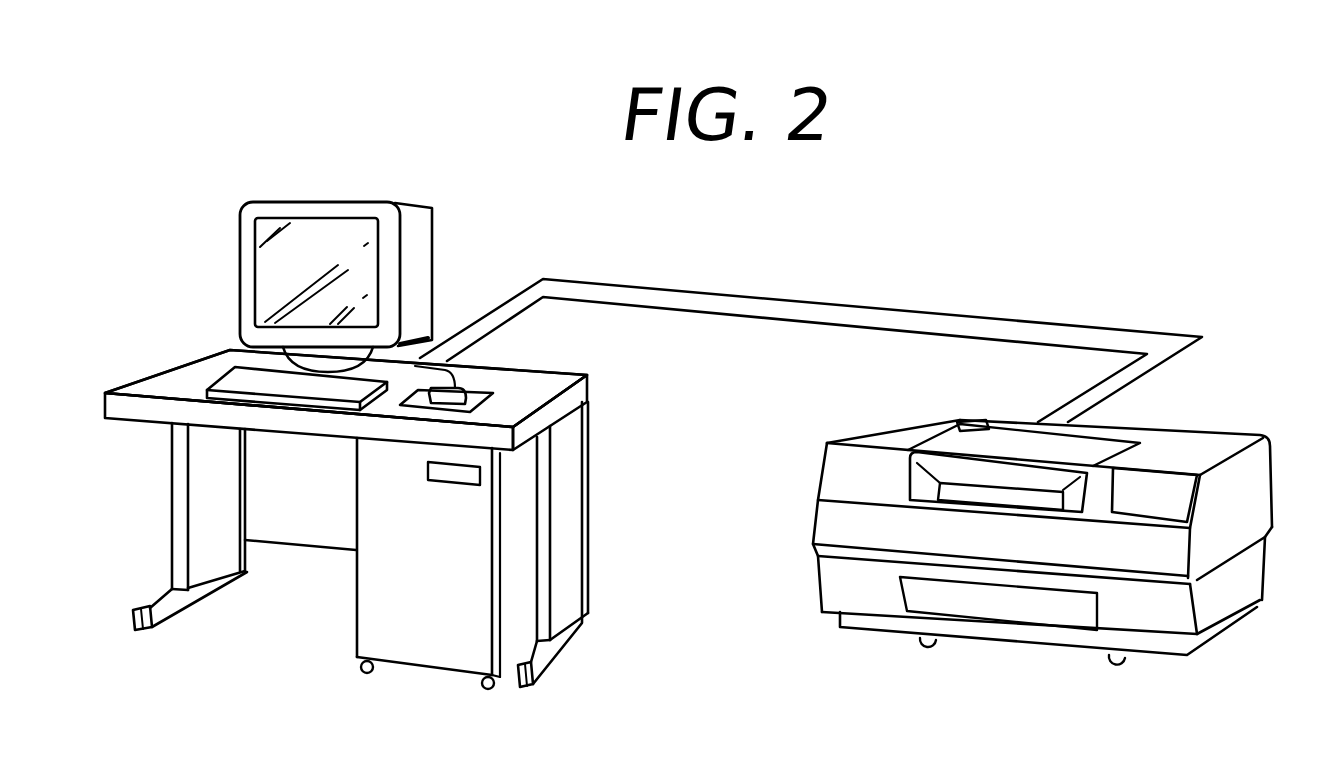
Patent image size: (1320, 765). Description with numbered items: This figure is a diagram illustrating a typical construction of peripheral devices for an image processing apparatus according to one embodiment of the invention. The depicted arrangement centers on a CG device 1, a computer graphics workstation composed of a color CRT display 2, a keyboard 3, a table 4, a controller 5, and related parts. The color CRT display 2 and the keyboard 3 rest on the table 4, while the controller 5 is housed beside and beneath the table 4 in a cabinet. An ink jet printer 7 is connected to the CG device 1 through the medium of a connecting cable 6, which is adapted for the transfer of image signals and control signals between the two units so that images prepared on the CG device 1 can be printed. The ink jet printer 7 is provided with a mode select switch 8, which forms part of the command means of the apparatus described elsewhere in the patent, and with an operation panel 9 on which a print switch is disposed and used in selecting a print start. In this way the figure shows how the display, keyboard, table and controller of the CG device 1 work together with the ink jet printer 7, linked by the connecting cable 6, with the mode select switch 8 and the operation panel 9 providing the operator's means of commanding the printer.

The CG device 1 is at (146, 364).
The color CRT display 2 is at (327, 203).
The keyboard 3 is at (324, 385).
The table 4 is at (580, 392).
The controller 5 is at (366, 618).
The connecting cable 6 is at (790, 320).
The ink jet printer 7 is at (1228, 433).
The mode select switch 8 is at (976, 420).
The operation panel 9 is at (1167, 503).